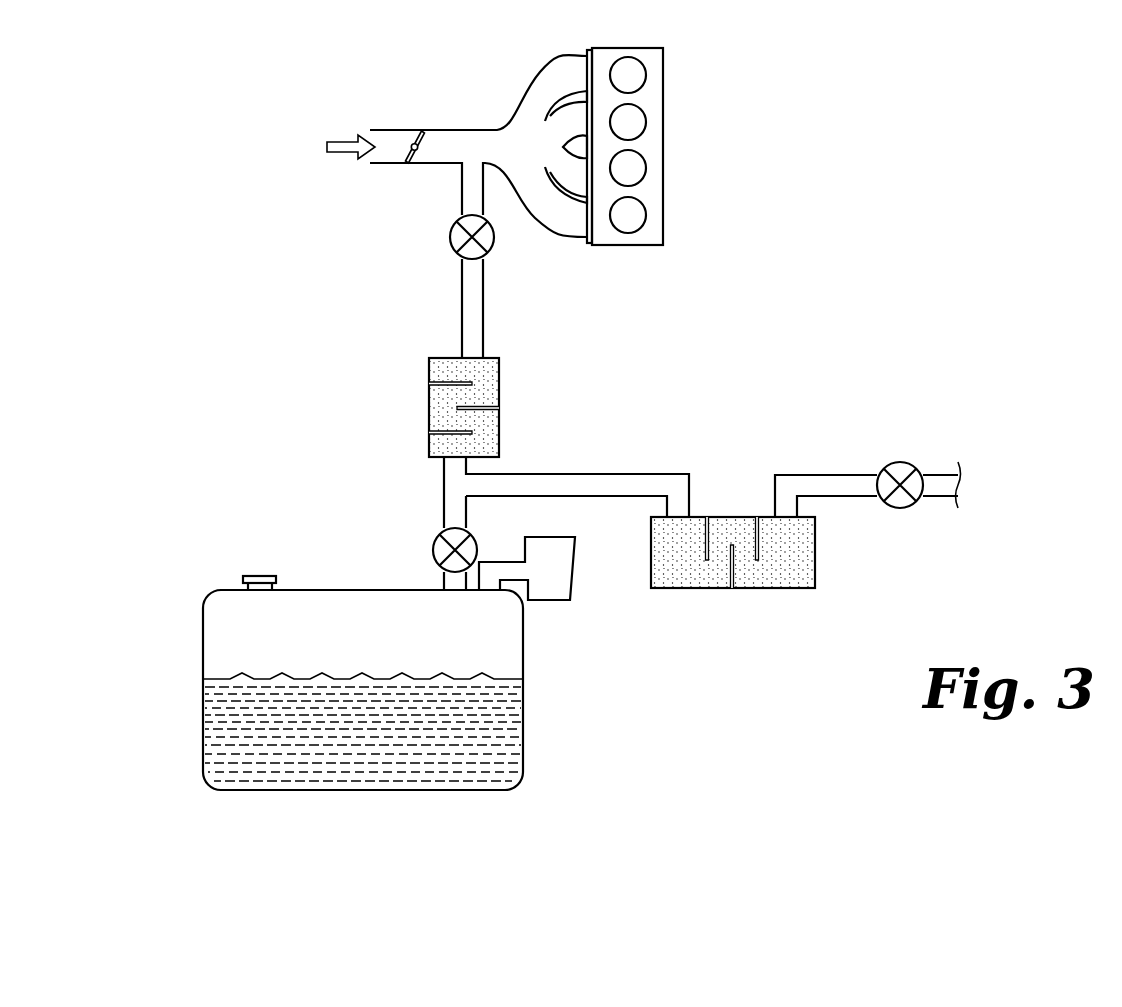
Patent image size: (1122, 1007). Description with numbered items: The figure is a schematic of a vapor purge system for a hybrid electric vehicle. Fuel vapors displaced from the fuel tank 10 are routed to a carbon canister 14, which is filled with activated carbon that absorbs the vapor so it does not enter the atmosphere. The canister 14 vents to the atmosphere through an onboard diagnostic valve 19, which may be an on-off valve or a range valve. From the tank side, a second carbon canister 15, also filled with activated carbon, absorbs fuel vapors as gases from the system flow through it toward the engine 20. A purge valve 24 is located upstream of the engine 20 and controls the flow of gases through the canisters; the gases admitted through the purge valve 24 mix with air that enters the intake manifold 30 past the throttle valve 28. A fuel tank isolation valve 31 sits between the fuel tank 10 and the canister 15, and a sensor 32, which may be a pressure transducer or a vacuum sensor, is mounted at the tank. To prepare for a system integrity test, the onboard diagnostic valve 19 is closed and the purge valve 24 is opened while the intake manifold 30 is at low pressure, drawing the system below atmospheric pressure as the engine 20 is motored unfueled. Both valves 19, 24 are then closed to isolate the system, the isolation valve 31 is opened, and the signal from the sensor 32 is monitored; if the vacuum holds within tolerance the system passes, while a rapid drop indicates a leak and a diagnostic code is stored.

The fuel tank 10 is at (203, 648).
The carbon canister 14 is at (748, 518).
The carbon canister 15 is at (429, 410).
The onboard diagnostic (OBD) valve 19 is at (900, 462).
The engine 20 is at (663, 150).
The purge valve 24 is at (456, 245).
The throttle valve 28 is at (412, 143).
The intake manifold 30 is at (497, 128).
The fuel tank isolation valve 31 is at (433, 550).
The sensor 32 is at (572, 568).